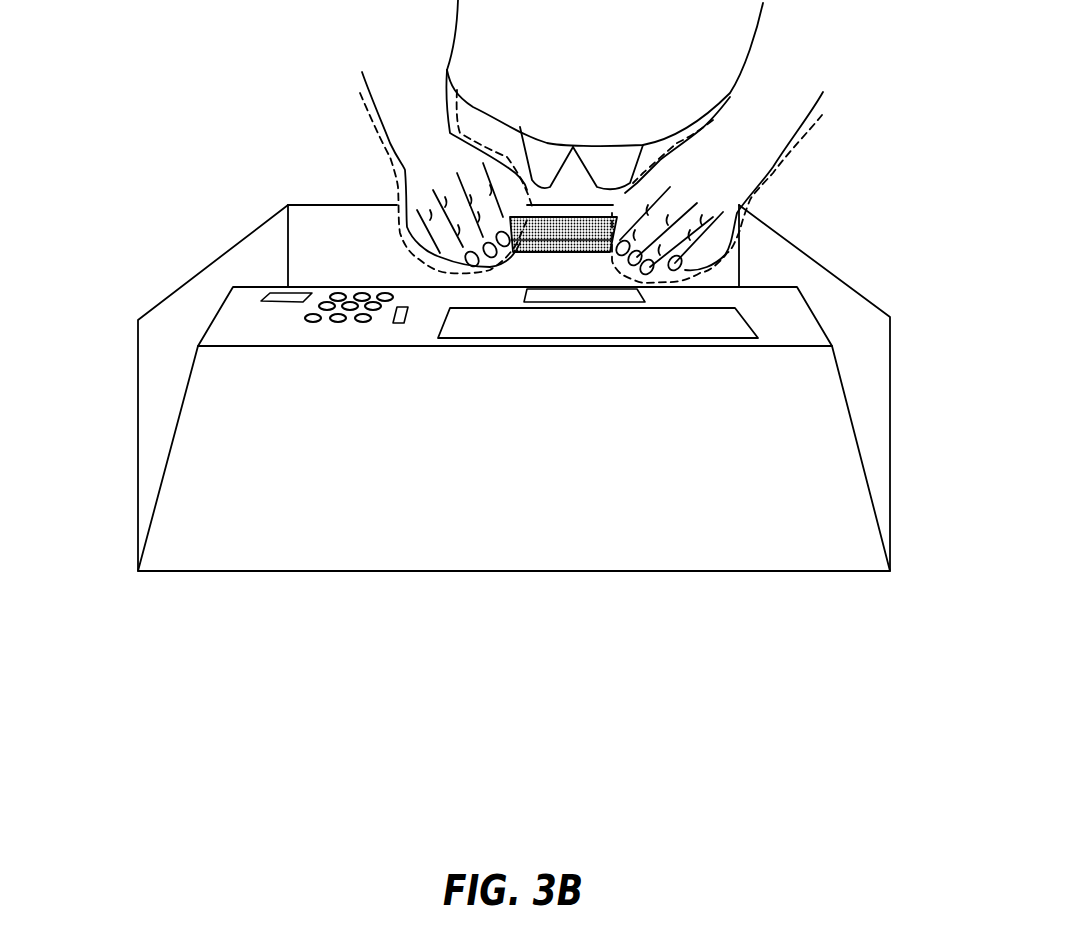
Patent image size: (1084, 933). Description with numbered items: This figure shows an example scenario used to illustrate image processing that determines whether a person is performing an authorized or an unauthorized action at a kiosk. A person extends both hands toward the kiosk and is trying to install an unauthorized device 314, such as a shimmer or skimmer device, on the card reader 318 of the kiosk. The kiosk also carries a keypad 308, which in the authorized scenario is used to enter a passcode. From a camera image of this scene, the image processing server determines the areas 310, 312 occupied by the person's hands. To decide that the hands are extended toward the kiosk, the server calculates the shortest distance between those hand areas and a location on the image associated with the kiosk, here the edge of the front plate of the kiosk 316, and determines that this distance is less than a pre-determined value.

The keypad 308 is at (317, 318).
The area occupied by a person's hand 310 is at (378, 157).
The area occupied by a person's hand 312 is at (777, 173).
The unauthorized device 314 is at (567, 230).
The edge of the front plate of the kiosk 316 is at (253, 283).
The card reader 318 is at (645, 300).